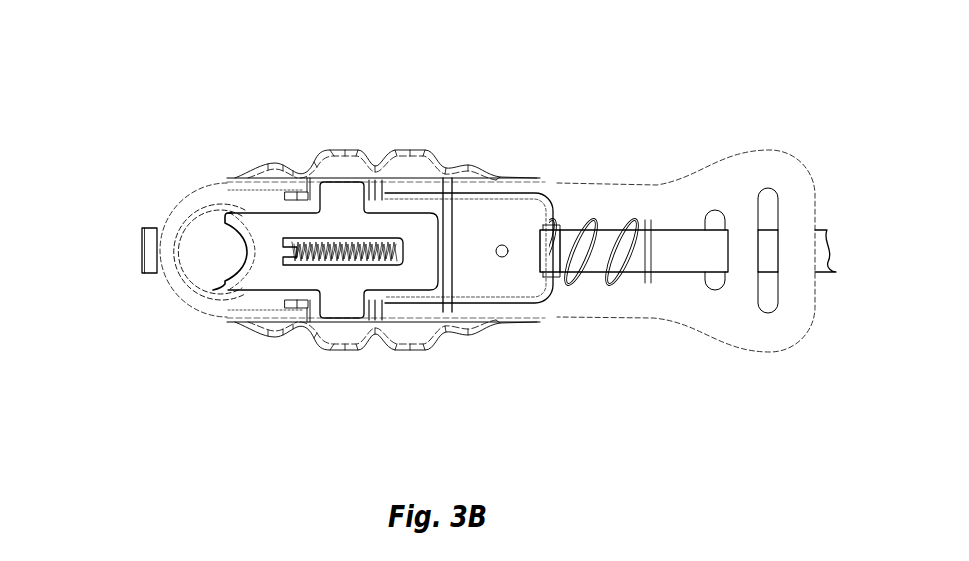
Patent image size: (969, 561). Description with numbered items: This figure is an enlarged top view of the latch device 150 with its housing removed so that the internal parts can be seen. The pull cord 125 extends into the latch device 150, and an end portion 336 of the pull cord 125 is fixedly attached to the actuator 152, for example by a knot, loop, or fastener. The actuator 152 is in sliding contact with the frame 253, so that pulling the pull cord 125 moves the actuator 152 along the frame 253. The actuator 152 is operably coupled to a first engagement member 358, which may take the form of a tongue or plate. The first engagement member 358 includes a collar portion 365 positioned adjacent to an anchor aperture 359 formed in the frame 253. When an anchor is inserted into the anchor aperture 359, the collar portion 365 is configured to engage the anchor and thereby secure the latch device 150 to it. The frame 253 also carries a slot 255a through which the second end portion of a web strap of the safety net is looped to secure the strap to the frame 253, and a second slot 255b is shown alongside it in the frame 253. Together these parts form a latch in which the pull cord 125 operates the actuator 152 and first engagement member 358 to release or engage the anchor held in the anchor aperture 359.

The latch device 150 is at (158, 53).
The actuator 152 is at (472, 196).
The pull cord 125 is at (678, 245).
The frame 253 is at (737, 176).
The slot 255a is at (777, 298).
The slot 255b is at (727, 280).
The end portion 336 is at (550, 240).
The first engagement member 358 is at (264, 226).
The anchor aperture 359 is at (198, 243).
The collar portion 365 is at (213, 290).